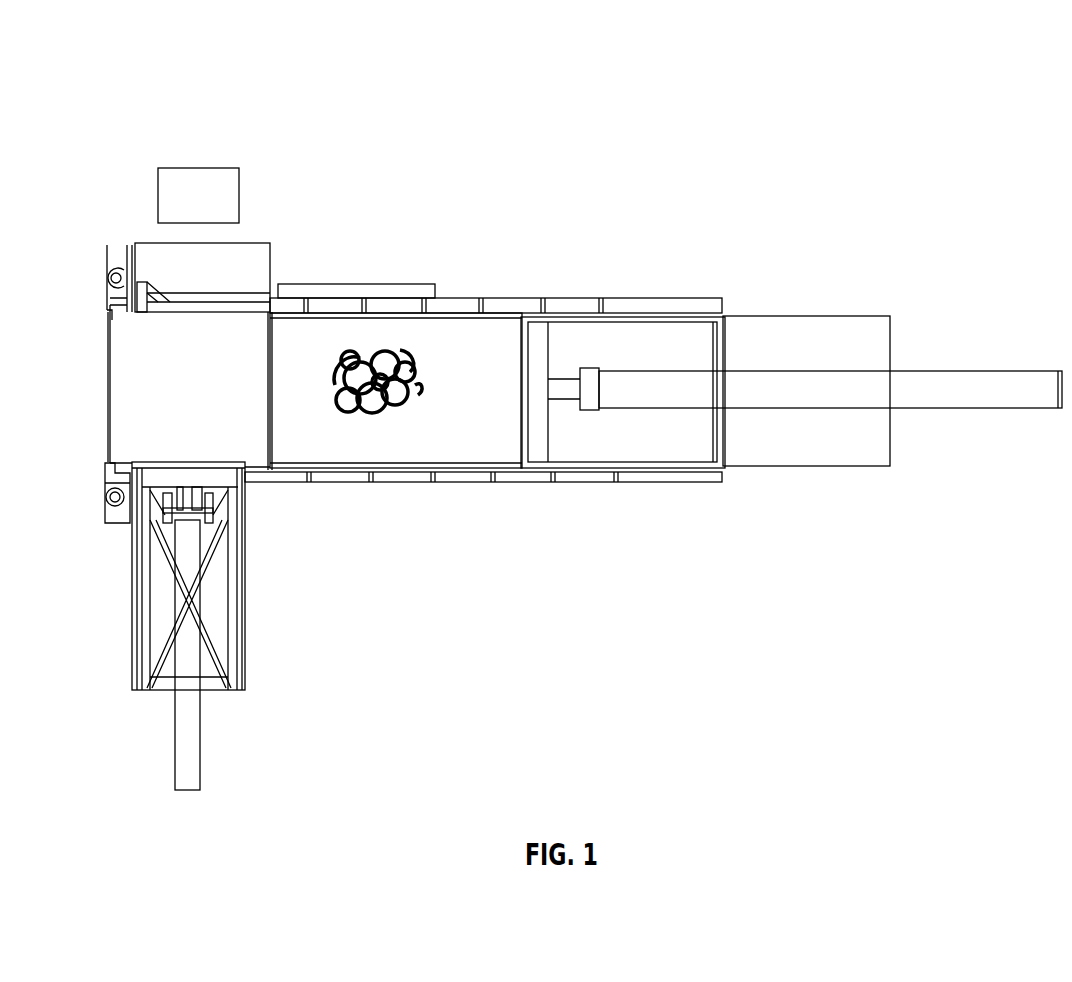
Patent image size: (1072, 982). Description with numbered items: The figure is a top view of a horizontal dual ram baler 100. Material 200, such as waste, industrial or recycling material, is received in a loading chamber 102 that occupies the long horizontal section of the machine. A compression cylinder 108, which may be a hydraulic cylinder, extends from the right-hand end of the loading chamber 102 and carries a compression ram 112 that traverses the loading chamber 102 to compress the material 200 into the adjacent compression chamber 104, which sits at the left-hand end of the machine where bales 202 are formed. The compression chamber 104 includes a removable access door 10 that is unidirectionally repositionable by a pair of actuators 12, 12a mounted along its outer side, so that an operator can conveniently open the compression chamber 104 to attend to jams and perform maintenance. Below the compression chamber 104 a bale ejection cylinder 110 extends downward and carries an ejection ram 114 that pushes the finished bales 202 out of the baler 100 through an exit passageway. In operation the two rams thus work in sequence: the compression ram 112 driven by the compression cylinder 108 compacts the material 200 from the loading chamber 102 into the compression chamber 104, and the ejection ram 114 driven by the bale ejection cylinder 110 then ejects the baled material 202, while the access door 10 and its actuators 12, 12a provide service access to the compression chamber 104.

The dual ram baler 100 is at (610, 71).
The bale 202 is at (207, 168).
The compression chamber 104 is at (142, 408).
The actuator 12a is at (113, 277).
The removable access door 10 is at (110, 440).
The actuator 12 is at (118, 497).
The loading chamber 102 is at (442, 328).
The material 200 is at (392, 392).
The compression ram 112 is at (540, 330).
The compression cylinder 108 is at (955, 370).
The bale ejection cylinder 110 is at (200, 770).
The ejection ram 114 is at (200, 505).